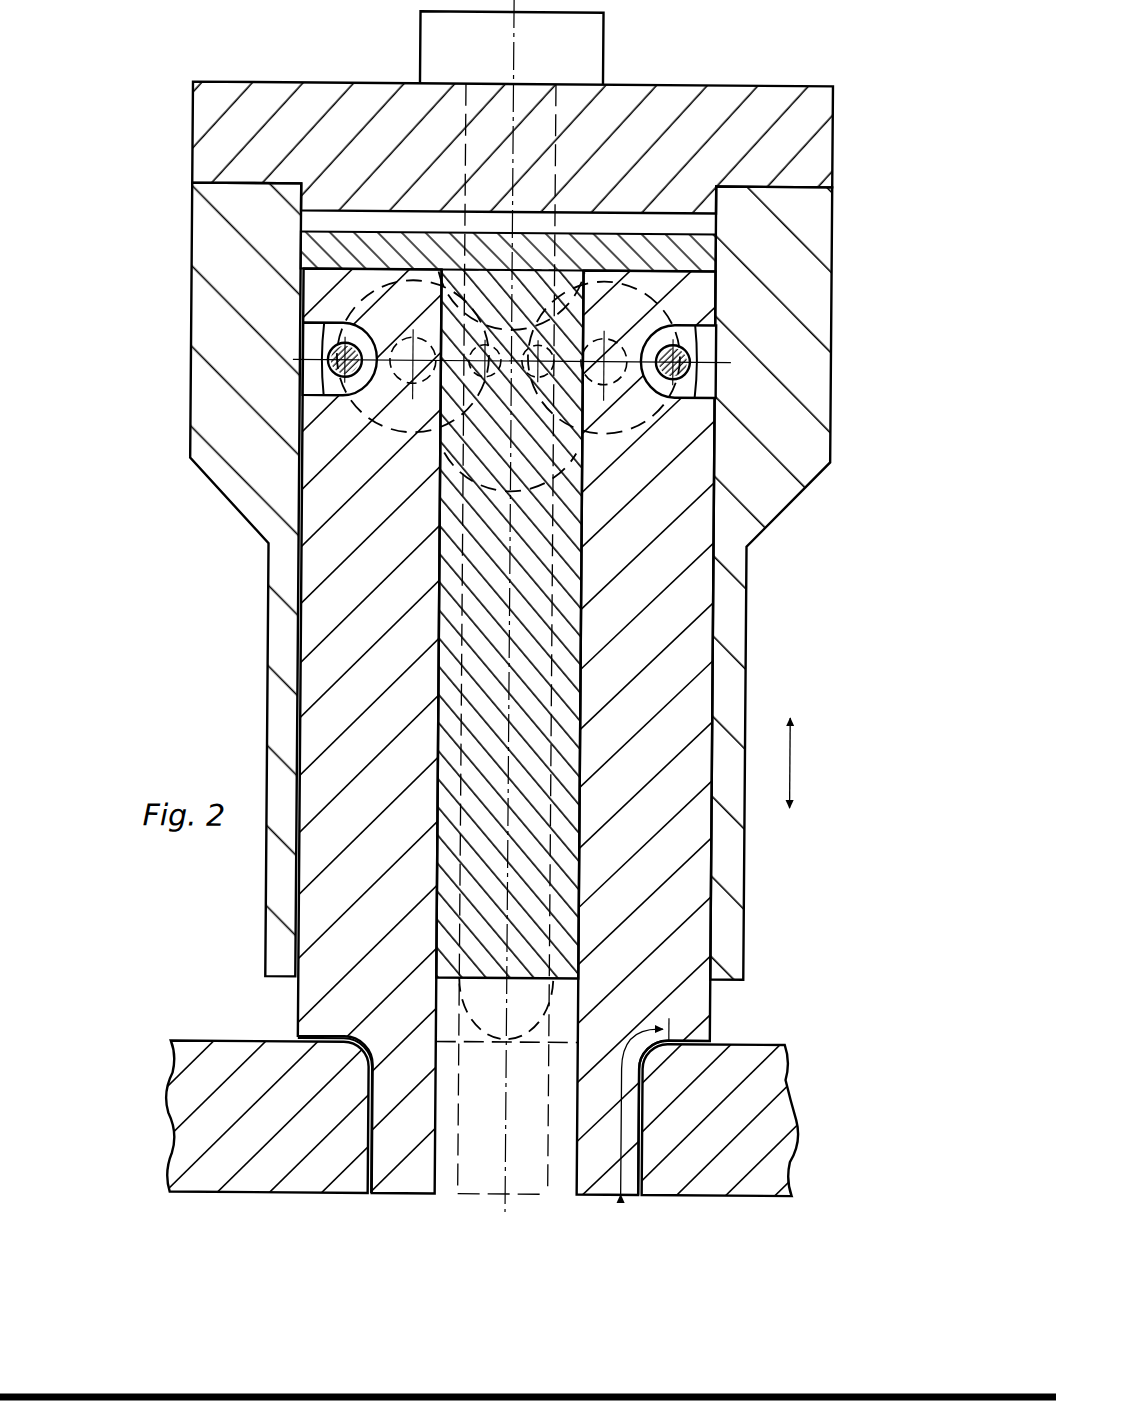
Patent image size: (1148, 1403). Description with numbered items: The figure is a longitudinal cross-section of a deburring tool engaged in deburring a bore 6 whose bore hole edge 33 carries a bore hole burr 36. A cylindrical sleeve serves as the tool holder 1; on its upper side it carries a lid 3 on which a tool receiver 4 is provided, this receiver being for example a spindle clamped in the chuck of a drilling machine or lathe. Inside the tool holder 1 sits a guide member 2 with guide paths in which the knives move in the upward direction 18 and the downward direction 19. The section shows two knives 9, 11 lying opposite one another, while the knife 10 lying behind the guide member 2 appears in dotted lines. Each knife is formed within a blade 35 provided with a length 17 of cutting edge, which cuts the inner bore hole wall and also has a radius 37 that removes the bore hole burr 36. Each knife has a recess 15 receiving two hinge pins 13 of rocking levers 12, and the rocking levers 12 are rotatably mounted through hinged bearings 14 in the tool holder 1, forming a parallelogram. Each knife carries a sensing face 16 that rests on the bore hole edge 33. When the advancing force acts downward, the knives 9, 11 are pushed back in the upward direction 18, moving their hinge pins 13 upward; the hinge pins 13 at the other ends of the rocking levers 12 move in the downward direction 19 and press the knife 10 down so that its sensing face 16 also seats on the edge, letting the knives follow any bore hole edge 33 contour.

The tool holder 1 is at (232, 243).
The guide member 2 is at (400, 253).
The lid 3 is at (662, 167).
The tool receiver 4 is at (495, 123).
The bore 6 is at (385, 1180).
The cutting knife 9 is at (672, 619).
The cutting knife 10 is at (511, 760).
The cutting knife 11 is at (362, 630).
The rocking lever 12 is at (364, 300).
The hinge pin 13 is at (330, 362).
The hinged bearing 14 is at (400, 379).
The recess 15 is at (322, 340).
The sensing face 16 is at (480, 1032).
The length of cutting edge 17 is at (629, 1118).
The upward direction 18 is at (809, 740).
The downward direction 19 is at (809, 787).
The bore hole edge 33 is at (772, 1044).
The blade 35 is at (391, 1123).
The bore hole burr 36 is at (352, 1060).
The radius 37 is at (676, 1056).